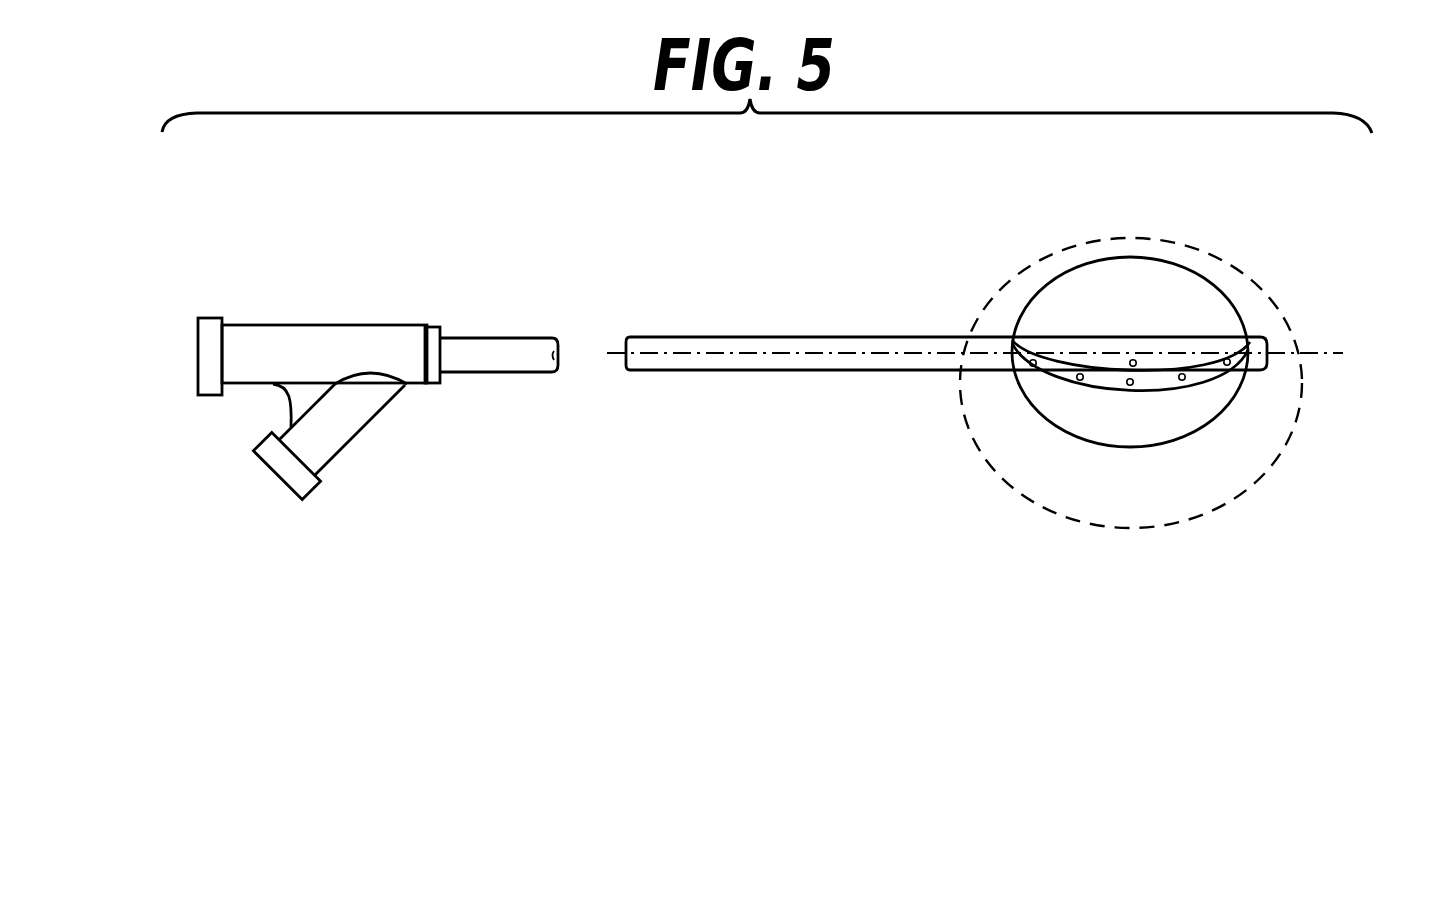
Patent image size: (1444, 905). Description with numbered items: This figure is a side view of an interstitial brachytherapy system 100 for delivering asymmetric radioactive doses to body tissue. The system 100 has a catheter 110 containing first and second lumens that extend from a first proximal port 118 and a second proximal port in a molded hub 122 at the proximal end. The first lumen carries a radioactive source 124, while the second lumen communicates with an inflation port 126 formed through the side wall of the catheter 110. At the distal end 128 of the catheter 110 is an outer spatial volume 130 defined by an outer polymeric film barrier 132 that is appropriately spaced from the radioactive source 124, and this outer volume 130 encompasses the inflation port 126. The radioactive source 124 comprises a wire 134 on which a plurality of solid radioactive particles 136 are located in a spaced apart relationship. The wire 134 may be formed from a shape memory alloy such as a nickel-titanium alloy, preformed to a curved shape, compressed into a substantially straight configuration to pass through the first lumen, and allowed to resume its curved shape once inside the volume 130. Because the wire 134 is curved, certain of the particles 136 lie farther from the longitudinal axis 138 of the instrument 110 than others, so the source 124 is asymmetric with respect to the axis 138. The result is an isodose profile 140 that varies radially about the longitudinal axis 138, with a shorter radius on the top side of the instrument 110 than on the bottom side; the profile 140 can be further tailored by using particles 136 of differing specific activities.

The system 100 is at (350, 223).
The catheter 110 is at (857, 306).
The first proximal port 118 is at (197, 352).
The molded hub 122 is at (291, 324).
The radioactive source 124 is at (1148, 403).
The inflation port 126 is at (1134, 359).
The distal end 128 is at (1188, 367).
The outer spatial volume 130 is at (1212, 413).
The outer polymeric film barrier 132 is at (1240, 393).
The wire 134 is at (1137, 384).
The solid radioactive particles 136 is at (1030, 366).
The longitudinal axis 138 is at (1328, 348).
The isodose profile 140 is at (993, 262).